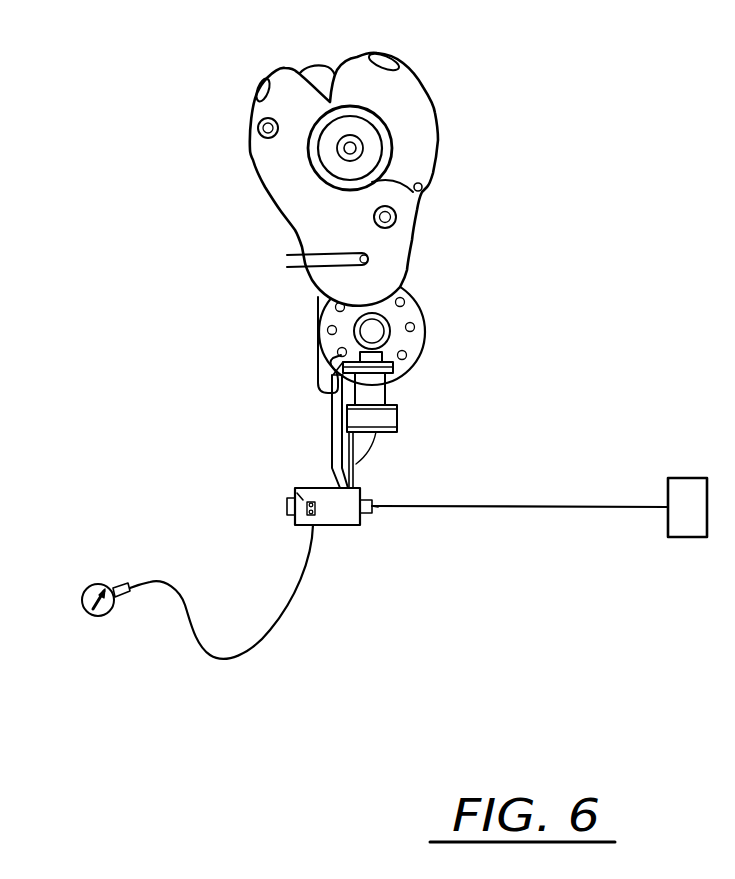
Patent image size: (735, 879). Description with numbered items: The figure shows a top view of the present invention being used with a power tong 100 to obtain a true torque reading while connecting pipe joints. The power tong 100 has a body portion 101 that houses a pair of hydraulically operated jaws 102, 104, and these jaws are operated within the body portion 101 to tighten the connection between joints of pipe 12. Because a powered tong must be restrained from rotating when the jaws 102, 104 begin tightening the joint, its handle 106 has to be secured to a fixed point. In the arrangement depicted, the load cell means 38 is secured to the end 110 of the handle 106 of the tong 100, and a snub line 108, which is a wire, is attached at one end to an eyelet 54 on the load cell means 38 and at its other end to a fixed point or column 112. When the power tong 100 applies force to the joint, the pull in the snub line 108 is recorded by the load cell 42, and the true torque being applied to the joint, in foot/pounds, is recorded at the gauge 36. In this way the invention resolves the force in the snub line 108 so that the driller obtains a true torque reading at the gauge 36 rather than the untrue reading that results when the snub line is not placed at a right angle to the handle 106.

The pipe 12 is at (357, 146).
The gauge 36 is at (115, 587).
The load cell means 38 is at (326, 531).
The load cell 42 is at (297, 493).
The eyelet 54 is at (371, 508).
The power tong 100 is at (462, 161).
The body portion 101 is at (355, 222).
The jaw 102 is at (287, 97).
The jaw 104 is at (417, 143).
The handle 106 is at (337, 437).
The snub line 108 is at (600, 510).
The end of handle 110 is at (357, 485).
The fixed point or column 112 is at (687, 498).